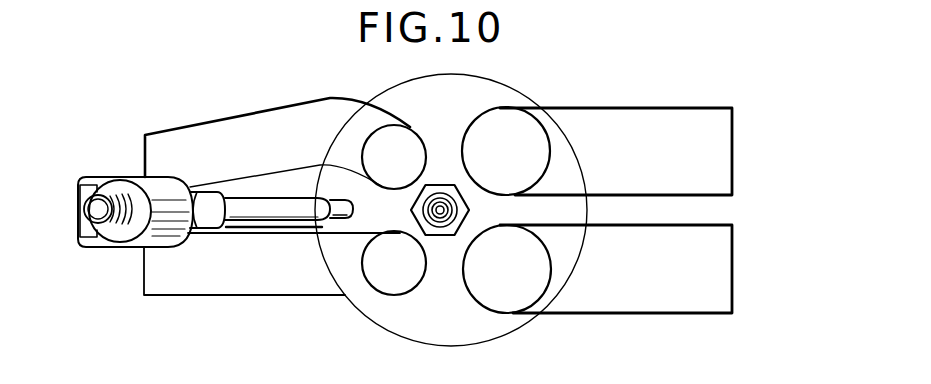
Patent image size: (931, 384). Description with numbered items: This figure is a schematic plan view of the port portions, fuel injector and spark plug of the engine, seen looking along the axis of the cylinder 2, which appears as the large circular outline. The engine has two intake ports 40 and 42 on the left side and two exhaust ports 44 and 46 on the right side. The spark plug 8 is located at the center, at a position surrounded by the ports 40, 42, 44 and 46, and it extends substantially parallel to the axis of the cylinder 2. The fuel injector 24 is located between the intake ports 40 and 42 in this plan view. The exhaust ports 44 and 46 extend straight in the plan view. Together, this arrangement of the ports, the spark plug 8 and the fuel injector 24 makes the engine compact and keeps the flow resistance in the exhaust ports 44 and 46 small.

The cylinder 2 is at (514, 84).
The spark plug 8 is at (440, 183).
The fuel injector 24 is at (123, 183).
The intake port 40 is at (220, 127).
The intake port 42 is at (253, 278).
The exhaust port 44 is at (613, 120).
The exhaust port 46 is at (605, 297).